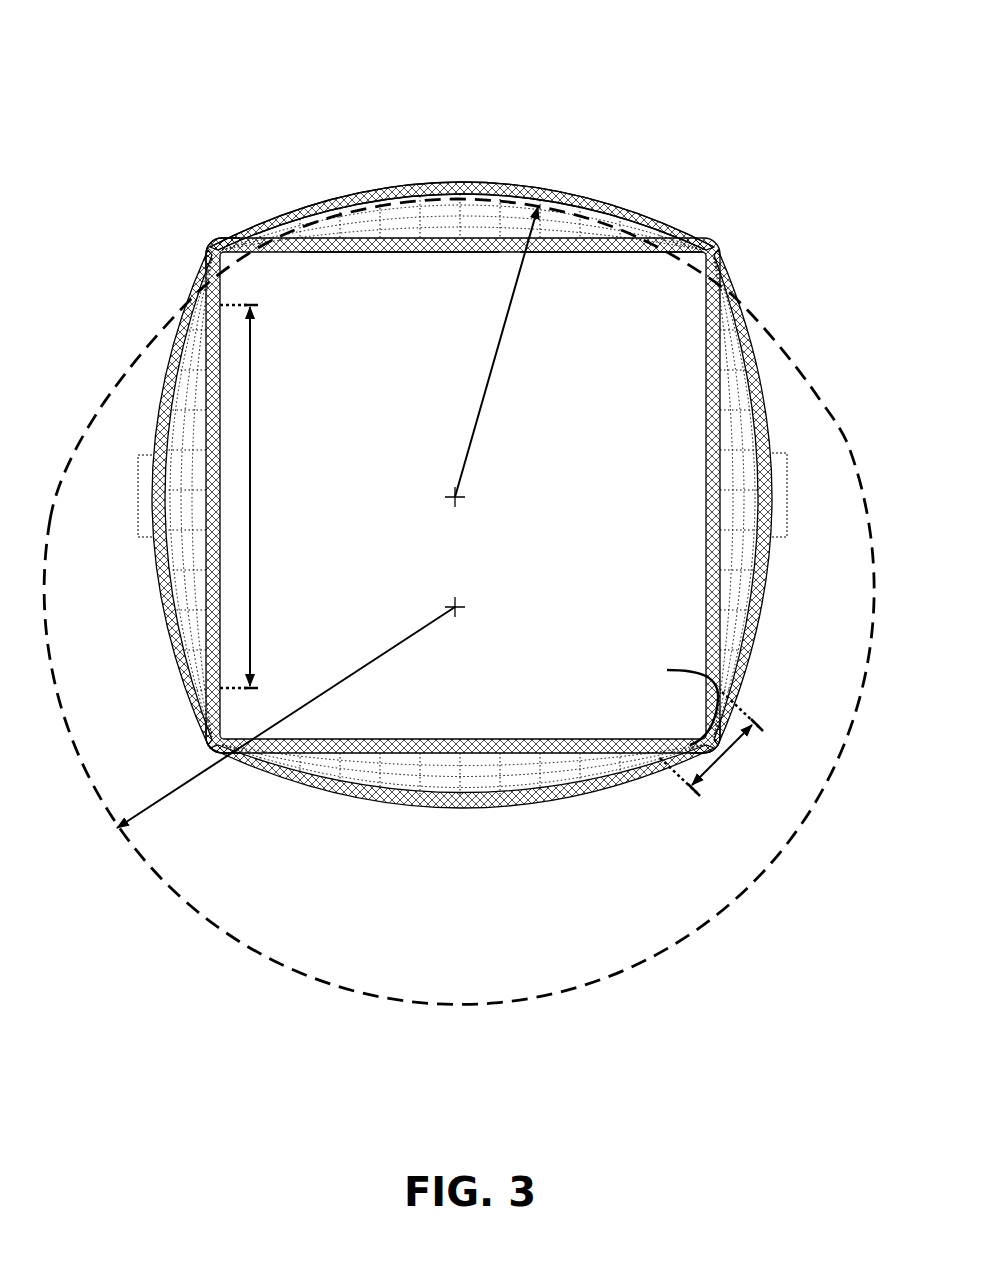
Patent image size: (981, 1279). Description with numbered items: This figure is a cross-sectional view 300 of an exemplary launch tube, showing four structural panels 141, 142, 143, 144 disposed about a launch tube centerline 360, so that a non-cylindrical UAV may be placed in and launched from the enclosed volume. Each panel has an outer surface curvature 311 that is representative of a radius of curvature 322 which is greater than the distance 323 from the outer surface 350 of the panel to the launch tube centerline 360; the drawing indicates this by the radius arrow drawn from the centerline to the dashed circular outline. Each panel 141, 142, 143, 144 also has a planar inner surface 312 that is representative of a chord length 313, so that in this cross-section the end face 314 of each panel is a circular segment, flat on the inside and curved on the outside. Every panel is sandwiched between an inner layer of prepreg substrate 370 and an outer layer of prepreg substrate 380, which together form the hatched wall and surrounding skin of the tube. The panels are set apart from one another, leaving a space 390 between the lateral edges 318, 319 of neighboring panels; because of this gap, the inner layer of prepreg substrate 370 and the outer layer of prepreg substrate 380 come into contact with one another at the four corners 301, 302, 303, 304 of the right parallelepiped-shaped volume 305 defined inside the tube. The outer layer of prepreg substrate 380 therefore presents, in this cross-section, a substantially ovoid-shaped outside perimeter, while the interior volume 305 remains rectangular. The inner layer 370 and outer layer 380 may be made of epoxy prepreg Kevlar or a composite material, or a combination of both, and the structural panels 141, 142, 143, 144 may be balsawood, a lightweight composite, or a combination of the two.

The cross-sectional view 300 is at (781, 65).
The outer surface curvature 311 is at (568, 213).
The corner 301 is at (721, 255).
The structural panel 144 is at (437, 213).
The outer layer of prepreg substrate 380 is at (645, 227).
The outer surface 350 is at (282, 220).
The structural panel 142 is at (455, 780).
The structural panel 143 is at (191, 590).
The end face 314 is at (191, 392).
The structural panel 141 is at (730, 447).
The right parallelepiped-shaped volume 305 is at (306, 355).
The corner 304 is at (211, 251).
The corner 303 is at (215, 741).
The corner 302 is at (691, 729).
The planar inner surface 312 is at (371, 254).
The inner layer of prepreg substrate 370 is at (598, 248).
The launch tube centerline 360 is at (466, 509).
The distance 323 is at (481, 402).
The radius of curvature 322 is at (320, 692).
The chord length 313 is at (254, 488).
The lateral edge 318 is at (694, 698).
The lateral edge 319 is at (660, 757).
The space 390 is at (722, 752).